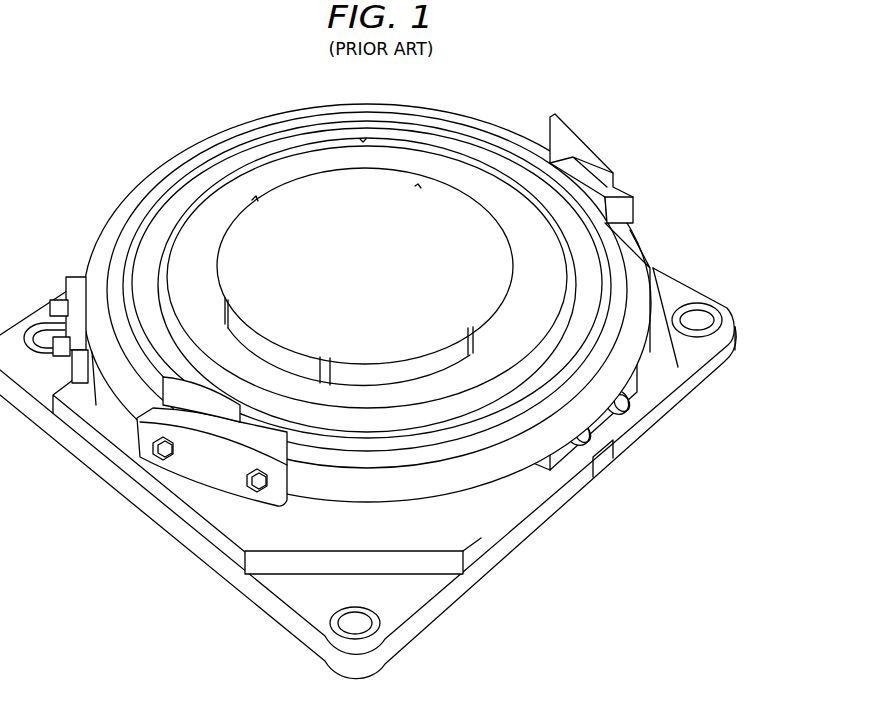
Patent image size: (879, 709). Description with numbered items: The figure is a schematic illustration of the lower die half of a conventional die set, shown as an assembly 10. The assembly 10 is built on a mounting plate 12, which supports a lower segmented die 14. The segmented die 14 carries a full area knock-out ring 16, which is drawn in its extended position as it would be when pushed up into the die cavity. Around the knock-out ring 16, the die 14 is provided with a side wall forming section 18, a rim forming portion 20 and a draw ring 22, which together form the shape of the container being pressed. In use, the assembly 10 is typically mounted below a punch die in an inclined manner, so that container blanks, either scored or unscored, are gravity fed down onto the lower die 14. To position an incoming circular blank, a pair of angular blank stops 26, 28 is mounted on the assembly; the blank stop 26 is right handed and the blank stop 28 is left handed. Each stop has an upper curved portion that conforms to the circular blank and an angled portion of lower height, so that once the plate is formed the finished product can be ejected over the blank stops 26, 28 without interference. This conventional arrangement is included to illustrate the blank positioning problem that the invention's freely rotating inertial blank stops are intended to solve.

The assembly 10 is at (385, 366).
The mounting plate 12 is at (656, 397).
The lower segmented die 14 is at (246, 132).
The full area knock-out ring 16 is at (352, 276).
The side wall forming section 18 is at (192, 230).
The rim forming portion 20 is at (147, 277).
The draw ring 22 is at (145, 357).
The blank stop 26 is at (575, 138).
The blank stop 28 is at (195, 428).